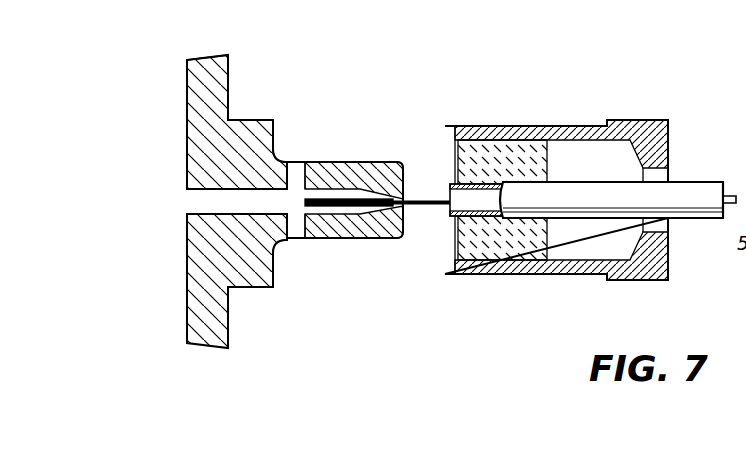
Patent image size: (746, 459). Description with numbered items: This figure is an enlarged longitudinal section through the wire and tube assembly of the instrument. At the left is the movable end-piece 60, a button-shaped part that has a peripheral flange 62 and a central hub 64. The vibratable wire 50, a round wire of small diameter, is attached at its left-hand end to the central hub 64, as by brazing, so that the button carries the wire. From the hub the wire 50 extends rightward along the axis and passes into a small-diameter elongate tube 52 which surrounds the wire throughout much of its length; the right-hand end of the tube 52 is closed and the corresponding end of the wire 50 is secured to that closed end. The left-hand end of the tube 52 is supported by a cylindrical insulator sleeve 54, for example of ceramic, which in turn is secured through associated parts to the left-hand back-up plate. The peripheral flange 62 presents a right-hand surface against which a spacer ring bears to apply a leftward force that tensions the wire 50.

The movable end-piece 60 is at (167, 92).
The peripheral flange 62 is at (231, 64).
The central hub 64 is at (269, 139).
The cylindrical insulator sleeve 54 is at (460, 152).
The vibratable wire 50 is at (425, 206).
The elongate tube 52 is at (690, 182).